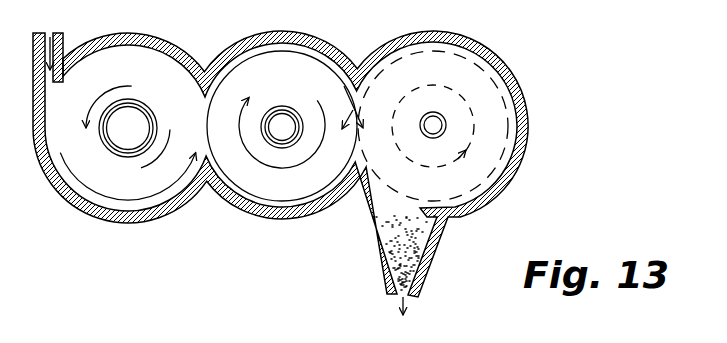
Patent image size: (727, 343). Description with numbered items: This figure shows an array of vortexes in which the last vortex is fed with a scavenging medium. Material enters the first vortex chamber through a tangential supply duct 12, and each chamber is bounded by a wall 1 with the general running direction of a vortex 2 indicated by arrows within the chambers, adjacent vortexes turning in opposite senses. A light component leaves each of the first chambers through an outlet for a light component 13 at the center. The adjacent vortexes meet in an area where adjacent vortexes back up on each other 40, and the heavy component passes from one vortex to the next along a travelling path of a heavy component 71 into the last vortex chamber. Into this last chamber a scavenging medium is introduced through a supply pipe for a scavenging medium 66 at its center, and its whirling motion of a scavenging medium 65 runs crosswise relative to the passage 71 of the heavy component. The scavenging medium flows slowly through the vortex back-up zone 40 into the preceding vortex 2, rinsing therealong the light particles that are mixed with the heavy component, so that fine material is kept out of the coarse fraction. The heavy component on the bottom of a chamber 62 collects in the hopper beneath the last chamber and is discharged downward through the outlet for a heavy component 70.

The wall of a vortex chamber 1 is at (176, 57).
The general running direction of a vortex 2 is at (131, 86).
The tangential supply duct 12 is at (55, 33).
The outlet for a light component 13 is at (127, 144).
The area where adjacent vortexes back up on each other 40 is at (212, 131).
The heavy component on the bottom of a chamber 62 is at (402, 232).
The whirling motion of a scavenging medium 65 is at (397, 58).
The supply pipe for a scavenging medium 66 is at (446, 125).
The outlet for a heavy component 70 is at (395, 298).
The travelling path of a heavy component 71 is at (341, 88).